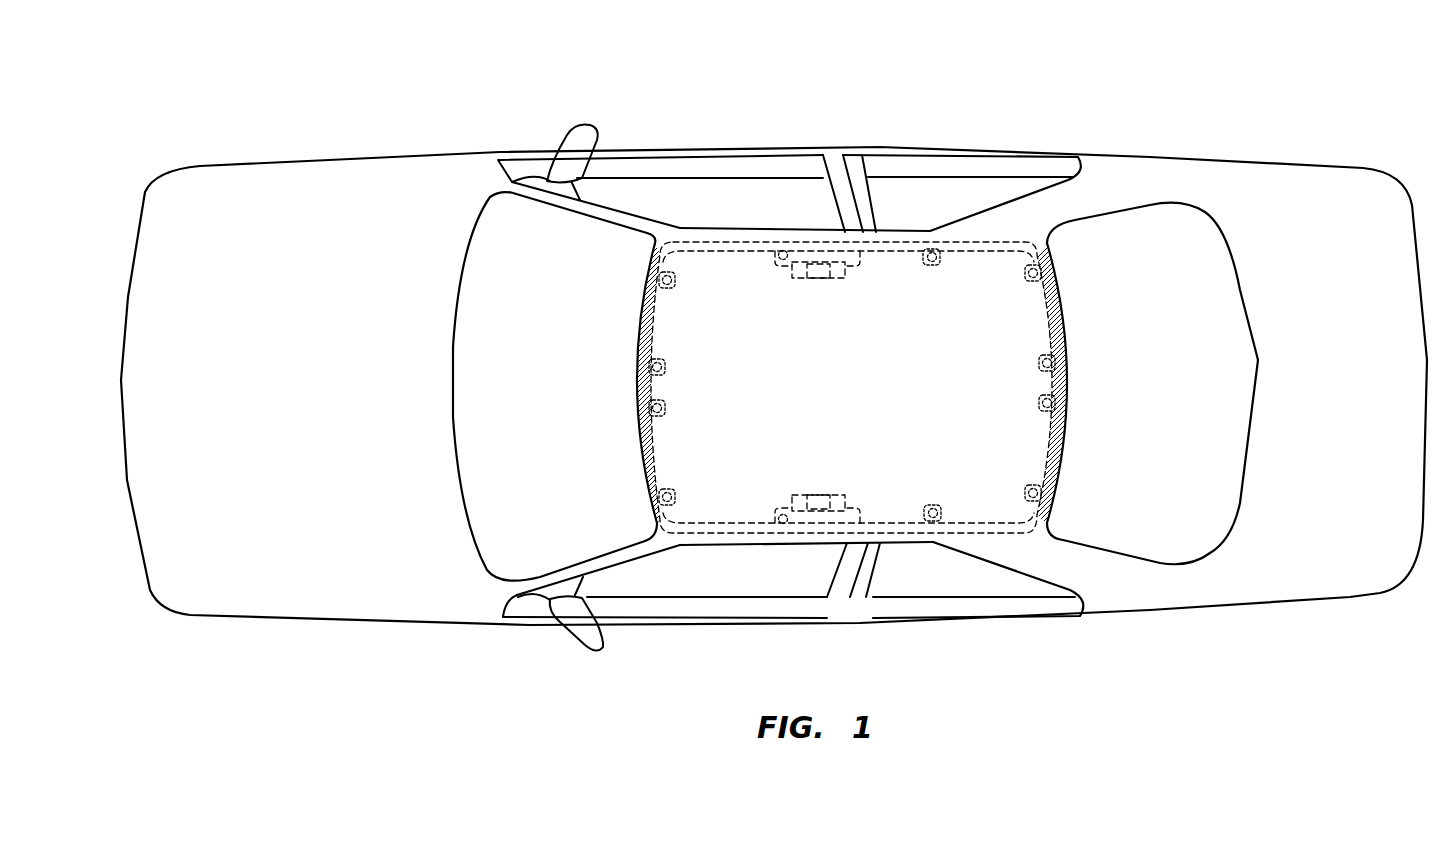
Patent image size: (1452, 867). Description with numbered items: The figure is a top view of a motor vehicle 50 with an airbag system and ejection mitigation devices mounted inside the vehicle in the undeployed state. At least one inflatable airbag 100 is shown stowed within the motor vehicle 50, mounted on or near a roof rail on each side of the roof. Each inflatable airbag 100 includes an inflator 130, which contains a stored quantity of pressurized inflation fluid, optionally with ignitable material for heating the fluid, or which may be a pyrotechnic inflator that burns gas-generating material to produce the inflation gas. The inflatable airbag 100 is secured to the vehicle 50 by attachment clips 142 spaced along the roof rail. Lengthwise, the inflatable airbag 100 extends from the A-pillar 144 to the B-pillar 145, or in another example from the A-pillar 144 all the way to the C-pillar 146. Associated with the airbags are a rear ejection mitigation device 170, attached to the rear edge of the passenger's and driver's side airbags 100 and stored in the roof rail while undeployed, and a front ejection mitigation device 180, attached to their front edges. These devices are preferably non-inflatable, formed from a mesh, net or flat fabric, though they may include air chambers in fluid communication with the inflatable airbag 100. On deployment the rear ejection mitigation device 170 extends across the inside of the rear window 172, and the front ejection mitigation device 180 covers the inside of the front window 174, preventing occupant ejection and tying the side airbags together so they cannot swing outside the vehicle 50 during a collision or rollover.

The motor vehicle 50 is at (340, 652).
The inflatable airbag 100 is at (970, 243).
The inflator 130 is at (818, 278).
The attachment clips 142 is at (932, 265).
The A-pillar 144 is at (617, 213).
The B-pillar 145 is at (861, 178).
The C-pillar 146 is at (1093, 198).
The rear ejection mitigation device 170 is at (1067, 390).
The rear window 172 is at (1200, 330).
The front window 174 is at (507, 483).
The front ejection mitigation device 180 is at (640, 393).